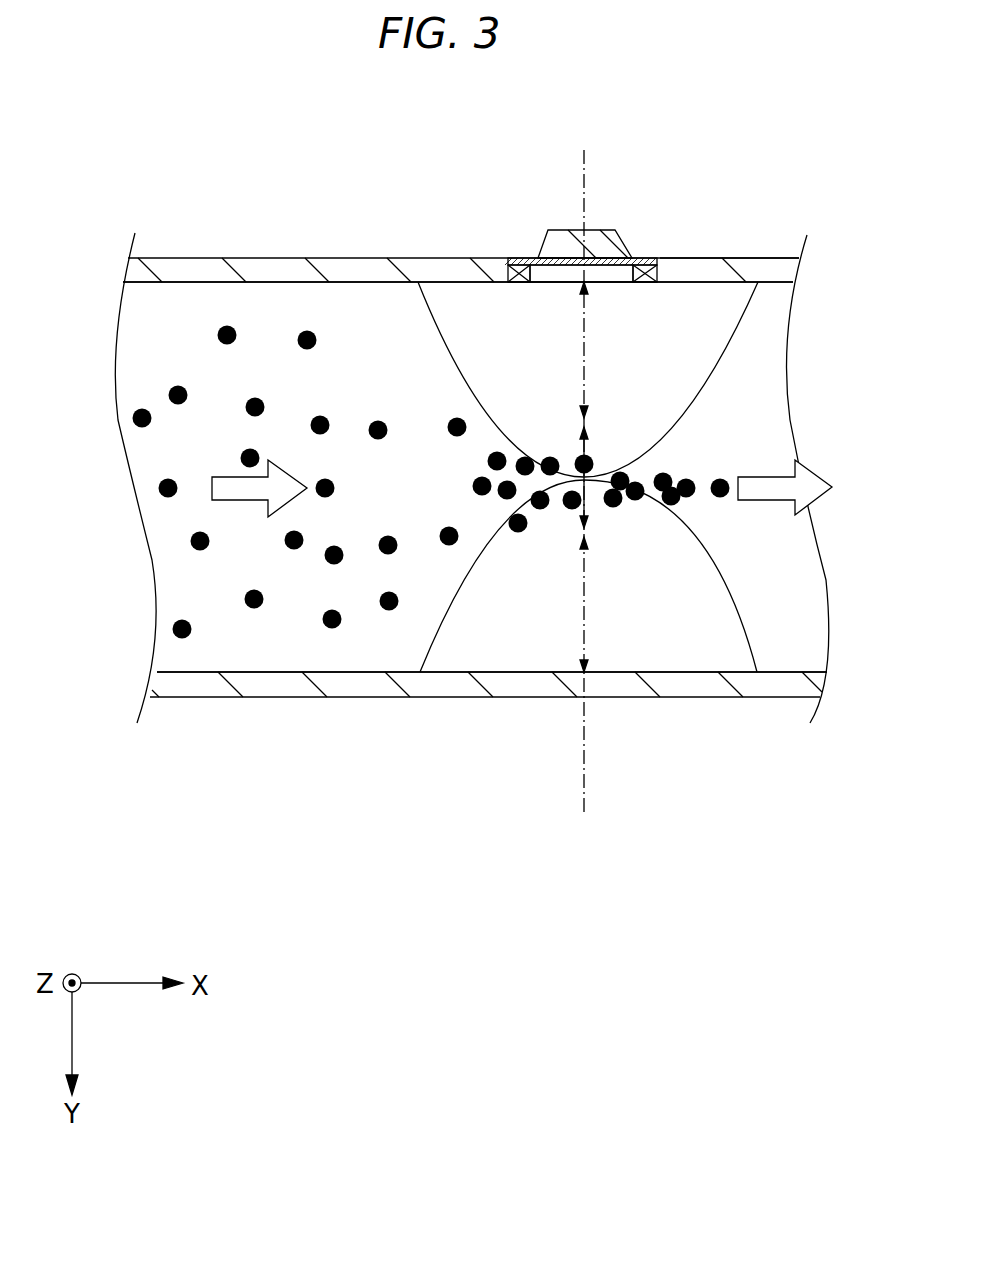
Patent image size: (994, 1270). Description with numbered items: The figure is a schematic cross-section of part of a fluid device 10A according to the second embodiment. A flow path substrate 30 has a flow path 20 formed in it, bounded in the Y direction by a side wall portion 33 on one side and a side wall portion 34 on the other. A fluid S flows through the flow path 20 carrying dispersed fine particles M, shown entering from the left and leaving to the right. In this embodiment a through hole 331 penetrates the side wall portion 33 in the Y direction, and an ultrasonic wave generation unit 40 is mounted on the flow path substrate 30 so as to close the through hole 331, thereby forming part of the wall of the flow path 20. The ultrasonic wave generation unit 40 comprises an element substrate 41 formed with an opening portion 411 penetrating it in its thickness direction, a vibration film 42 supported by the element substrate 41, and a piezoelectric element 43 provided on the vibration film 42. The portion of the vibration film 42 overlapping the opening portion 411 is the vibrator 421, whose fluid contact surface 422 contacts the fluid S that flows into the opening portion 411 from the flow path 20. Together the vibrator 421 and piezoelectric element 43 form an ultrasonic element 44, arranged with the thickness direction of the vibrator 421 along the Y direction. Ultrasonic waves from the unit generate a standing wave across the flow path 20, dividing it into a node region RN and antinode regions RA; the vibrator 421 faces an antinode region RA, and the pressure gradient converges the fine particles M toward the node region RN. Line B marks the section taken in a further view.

The fluid device 10A is at (155, 120).
The flow path 20 is at (292, 283).
The flow path substrate 30 is at (313, 258).
The side wall portion 33 is at (772, 258).
The through hole 331 is at (518, 282).
The side wall portion 34 is at (732, 697).
The ultrasonic wave generation unit 40 is at (617, 193).
The element substrate 41 is at (650, 262).
The opening portion 411 is at (625, 282).
The vibration film 42 is at (627, 257).
The vibrator 421 is at (538, 258).
The fluid contact surface 422 is at (557, 283).
The piezoelectric element 43 is at (556, 232).
The ultrasonic element 44 is at (525, 186).
The line B- B is at (572, 798).
The antinode region RA is at (588, 340).
The node region RN is at (588, 448).
The fluid S is at (172, 323).
The fine particles M is at (168, 393).